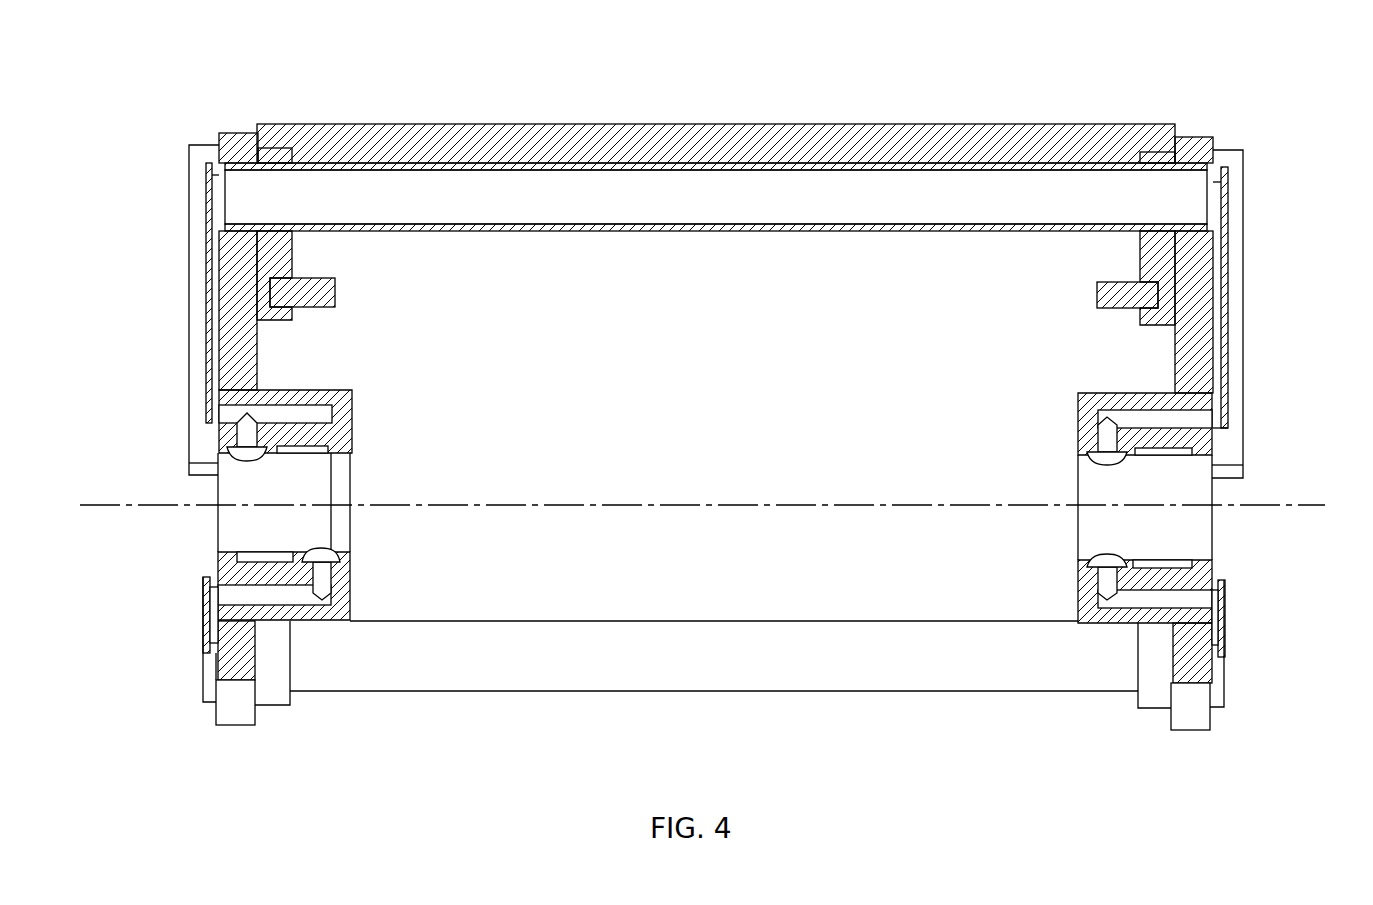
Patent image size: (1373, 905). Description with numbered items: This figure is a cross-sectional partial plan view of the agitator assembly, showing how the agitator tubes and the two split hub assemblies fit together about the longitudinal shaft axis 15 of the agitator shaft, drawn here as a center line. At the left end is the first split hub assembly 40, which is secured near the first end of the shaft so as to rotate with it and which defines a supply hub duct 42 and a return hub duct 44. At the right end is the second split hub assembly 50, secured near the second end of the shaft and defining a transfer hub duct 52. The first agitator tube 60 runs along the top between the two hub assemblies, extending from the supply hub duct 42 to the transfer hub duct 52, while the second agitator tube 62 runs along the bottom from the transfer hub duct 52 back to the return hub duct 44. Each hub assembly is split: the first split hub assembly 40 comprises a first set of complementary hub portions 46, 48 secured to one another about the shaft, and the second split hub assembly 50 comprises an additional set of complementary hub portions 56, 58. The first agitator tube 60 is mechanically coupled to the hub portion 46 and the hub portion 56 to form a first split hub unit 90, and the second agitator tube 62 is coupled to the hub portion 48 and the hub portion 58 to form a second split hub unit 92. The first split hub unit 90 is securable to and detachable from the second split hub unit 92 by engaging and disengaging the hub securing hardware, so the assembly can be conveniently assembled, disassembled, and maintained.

The longitudinal shaft axis 15 is at (1285, 505).
The first split hub assembly 40 is at (385, 381).
The supply hub duct 42 is at (208, 268).
The return hub duct 44 is at (205, 600).
The first one of the first set of complementary hub portions 46 is at (352, 426).
The second one of the first set of complementary hub portions 48 is at (352, 598).
The second split hub assembly 50 is at (1048, 394).
The transfer hub duct 52 is at (1218, 300).
The first one of the second set of complementary hub portions 56 is at (1078, 420).
The second one of the second set of complementary hub portions 58 is at (1078, 590).
The first agitator tube 60 is at (673, 232).
The second agitator tube 62 is at (628, 621).
The first split hub unit 90 is at (1252, 85).
The second split hub unit 92 is at (1103, 724).